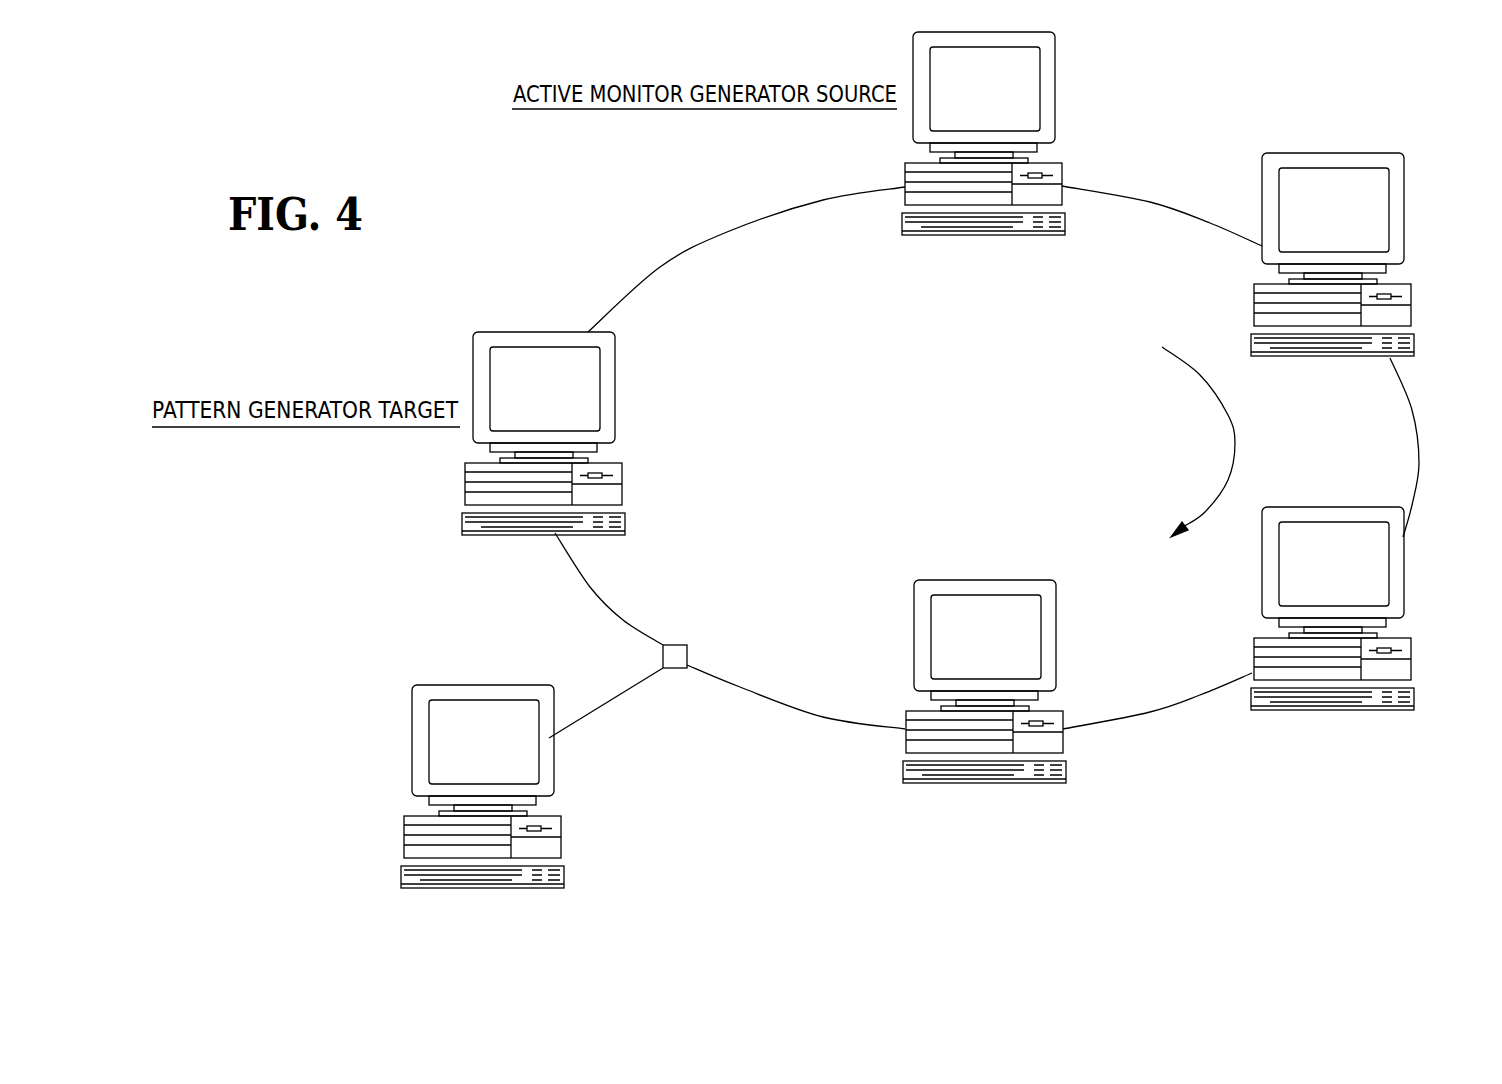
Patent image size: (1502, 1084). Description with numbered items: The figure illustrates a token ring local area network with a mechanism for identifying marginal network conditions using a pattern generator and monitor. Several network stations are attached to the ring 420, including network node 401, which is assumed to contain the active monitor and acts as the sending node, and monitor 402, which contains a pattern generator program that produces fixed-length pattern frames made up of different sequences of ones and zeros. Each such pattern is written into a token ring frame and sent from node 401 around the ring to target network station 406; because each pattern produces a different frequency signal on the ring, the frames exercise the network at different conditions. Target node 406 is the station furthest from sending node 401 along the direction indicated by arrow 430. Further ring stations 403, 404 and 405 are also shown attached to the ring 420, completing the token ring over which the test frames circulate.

The network node 401 is at (1055, 88).
The monitor 402 is at (1403, 190).
The ring station 403 is at (1411, 668).
The ring station 404 is at (914, 638).
The station attached via lobe 405 is at (412, 743).
The target network station or node 406 is at (612, 389).
The token ring network 420 is at (727, 232).
The arrow 430 is at (1232, 444).